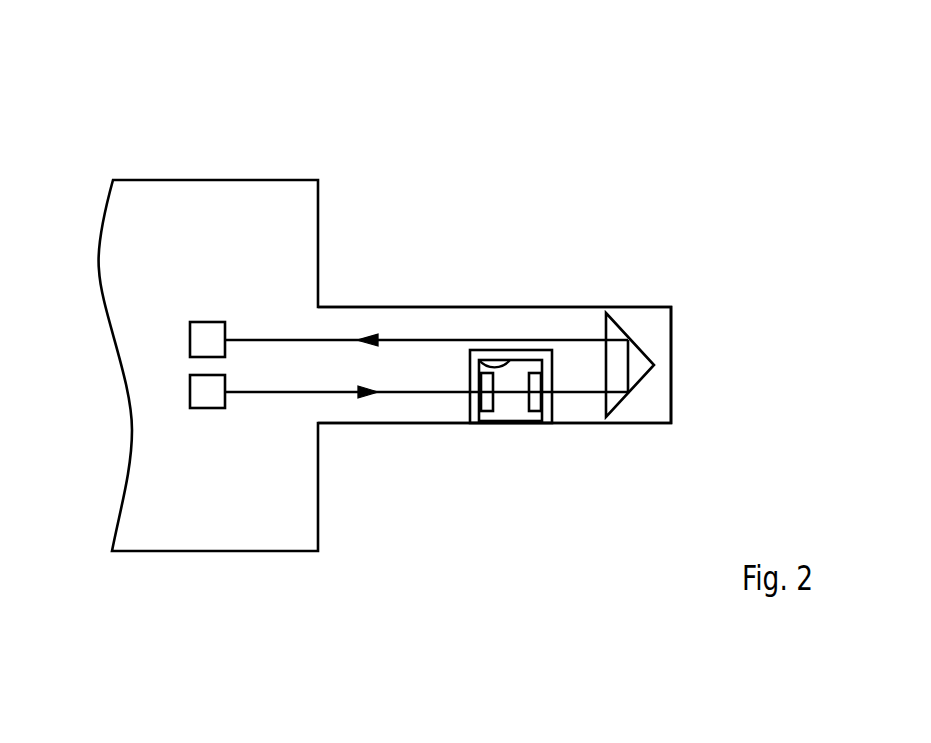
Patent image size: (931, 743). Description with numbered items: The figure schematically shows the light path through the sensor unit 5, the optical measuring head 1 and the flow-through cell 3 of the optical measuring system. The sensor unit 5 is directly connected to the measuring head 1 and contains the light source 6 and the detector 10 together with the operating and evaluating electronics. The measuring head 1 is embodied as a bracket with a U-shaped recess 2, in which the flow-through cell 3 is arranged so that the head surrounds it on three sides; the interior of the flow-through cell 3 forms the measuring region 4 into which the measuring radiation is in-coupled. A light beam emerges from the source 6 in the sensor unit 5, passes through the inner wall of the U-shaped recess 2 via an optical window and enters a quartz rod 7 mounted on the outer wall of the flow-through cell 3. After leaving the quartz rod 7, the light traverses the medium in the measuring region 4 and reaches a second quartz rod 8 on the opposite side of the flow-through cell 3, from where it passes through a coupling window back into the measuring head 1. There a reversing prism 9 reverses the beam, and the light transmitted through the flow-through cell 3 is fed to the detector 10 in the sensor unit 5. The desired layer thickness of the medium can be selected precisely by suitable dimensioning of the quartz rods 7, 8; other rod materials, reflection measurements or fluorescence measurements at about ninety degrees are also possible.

The optical measuring head 1 is at (688, 363).
The U-shaped recess 2 is at (485, 357).
The flow-through cell 3 is at (512, 438).
The measuring region 4 is at (498, 418).
The sensor unit 5 is at (218, 170).
The source 6 is at (208, 397).
The quartz rod 7 is at (486, 402).
The second quartz rod 8 is at (535, 402).
The reversing prism 9 is at (635, 358).
The detector 10 is at (207, 332).